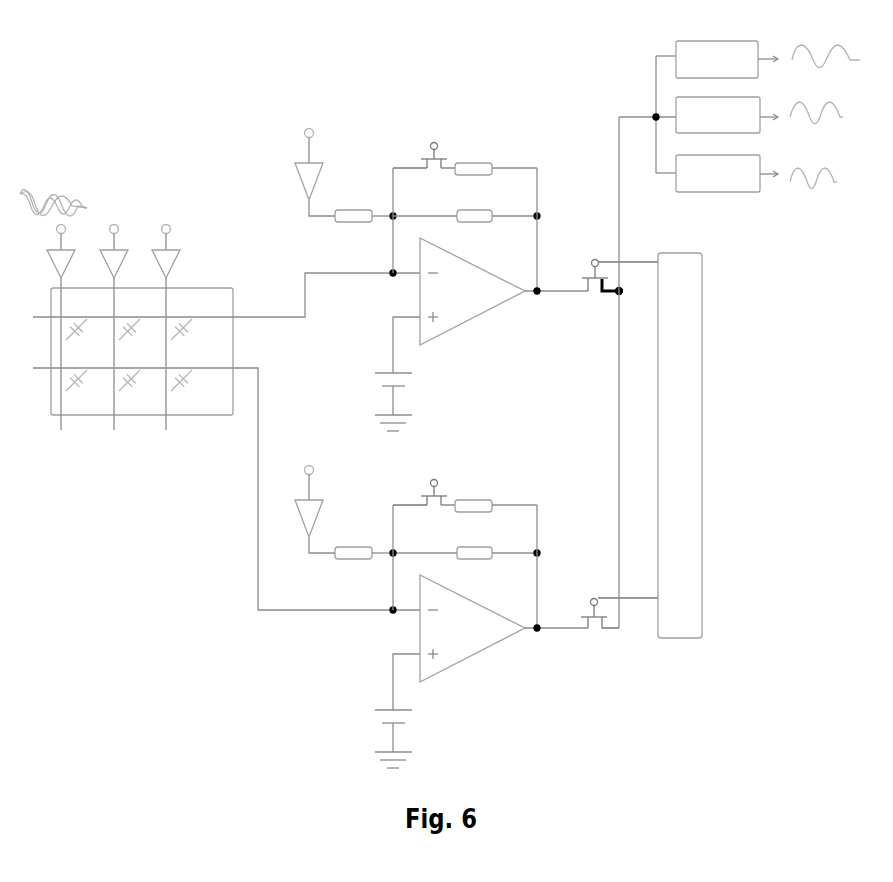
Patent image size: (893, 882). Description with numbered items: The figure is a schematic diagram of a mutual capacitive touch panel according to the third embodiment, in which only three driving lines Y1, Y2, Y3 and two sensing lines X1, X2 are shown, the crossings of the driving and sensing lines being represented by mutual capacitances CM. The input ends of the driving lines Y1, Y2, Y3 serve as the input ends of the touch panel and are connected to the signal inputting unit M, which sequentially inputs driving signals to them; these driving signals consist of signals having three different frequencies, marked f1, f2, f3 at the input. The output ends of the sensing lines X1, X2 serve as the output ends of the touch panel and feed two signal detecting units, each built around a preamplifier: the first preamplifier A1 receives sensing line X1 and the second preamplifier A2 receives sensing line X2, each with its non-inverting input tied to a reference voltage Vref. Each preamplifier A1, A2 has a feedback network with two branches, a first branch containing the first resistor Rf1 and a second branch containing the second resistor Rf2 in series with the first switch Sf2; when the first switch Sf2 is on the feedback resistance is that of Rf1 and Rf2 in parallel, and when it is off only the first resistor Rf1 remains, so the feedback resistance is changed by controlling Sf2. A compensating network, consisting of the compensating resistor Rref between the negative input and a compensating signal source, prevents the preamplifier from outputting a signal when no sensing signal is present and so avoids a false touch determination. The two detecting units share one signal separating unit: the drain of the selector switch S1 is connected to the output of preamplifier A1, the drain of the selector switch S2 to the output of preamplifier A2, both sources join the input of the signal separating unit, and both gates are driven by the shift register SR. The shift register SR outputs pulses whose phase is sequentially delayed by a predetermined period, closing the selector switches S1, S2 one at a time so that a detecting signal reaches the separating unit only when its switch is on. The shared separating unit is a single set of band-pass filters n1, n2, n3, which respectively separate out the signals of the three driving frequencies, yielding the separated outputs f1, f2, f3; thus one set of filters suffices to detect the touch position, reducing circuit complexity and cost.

The signal inputting unit M is at (61, 194).
The first sensing line X1 is at (222, 295).
The second sensing line X2 is at (222, 480).
The first driving line Y1 is at (61, 343).
The second driving line Y2 is at (114, 343).
The third driving line Y3 is at (166, 343).
The mutual capacitance CM is at (139, 367).
The compensating resistor Rref is at (364, 371).
The first resistor Rf1 is at (465, 374).
The second resistor Rf2 is at (496, 328).
The first switch Sf2 is at (424, 309).
The first preamplifier A1 is at (472, 293).
The second preamplifier A2 is at (472, 634).
The reference voltage source Vref is at (414, 542).
The selector switch S1 is at (620, 267).
The selector switch S2 is at (619, 603).
The shift register SR is at (679, 435).
The band-pass filter n1 is at (727, 49).
The band-pass filter n2 is at (727, 105).
The band-pass filter n3 is at (727, 164).
The first frequency output signal f1 is at (826, 46).
The second frequency output signal f2 is at (816, 108).
The third frequency output signal f3 is at (813, 172).